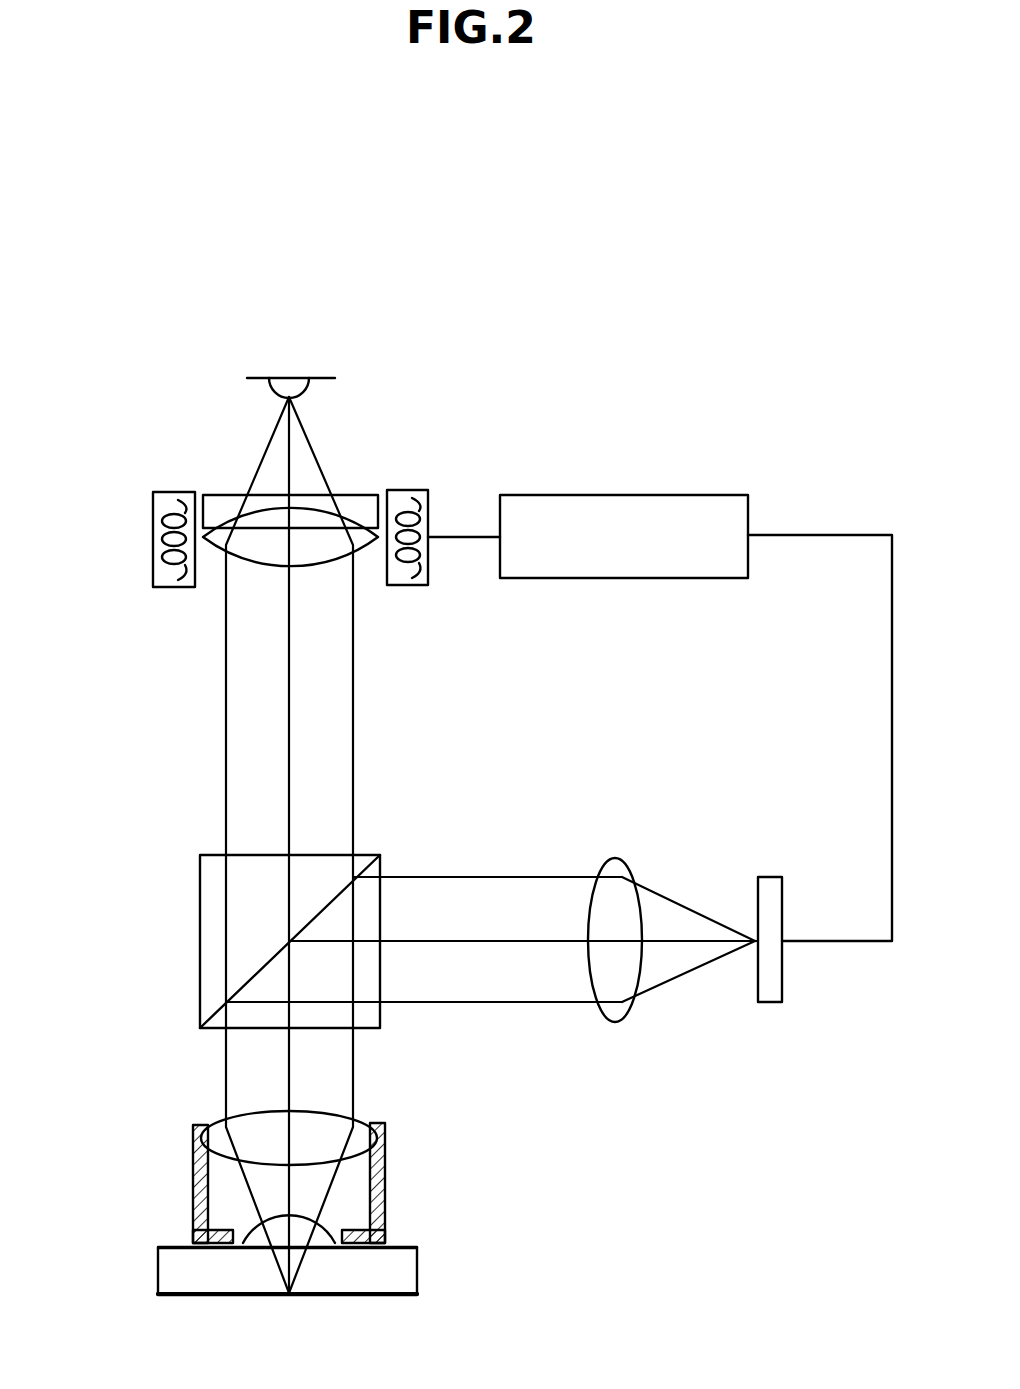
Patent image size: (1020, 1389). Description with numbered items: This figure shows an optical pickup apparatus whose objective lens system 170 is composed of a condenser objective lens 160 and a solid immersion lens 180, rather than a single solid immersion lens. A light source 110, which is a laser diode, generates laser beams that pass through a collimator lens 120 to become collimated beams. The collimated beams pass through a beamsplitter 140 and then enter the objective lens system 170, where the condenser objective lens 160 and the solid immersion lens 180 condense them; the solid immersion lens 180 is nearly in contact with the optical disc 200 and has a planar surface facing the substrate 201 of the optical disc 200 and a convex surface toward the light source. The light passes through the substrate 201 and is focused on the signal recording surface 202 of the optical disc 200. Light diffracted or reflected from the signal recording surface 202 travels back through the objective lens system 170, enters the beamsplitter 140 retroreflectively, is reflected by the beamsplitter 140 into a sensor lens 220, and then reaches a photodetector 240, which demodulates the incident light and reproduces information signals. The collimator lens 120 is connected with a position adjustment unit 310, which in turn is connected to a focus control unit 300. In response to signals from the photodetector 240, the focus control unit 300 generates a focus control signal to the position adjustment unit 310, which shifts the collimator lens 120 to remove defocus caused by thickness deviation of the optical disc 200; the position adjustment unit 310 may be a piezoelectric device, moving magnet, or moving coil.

The light source 110 is at (296, 378).
The collimator lens 120 is at (330, 560).
The position adjustment unit 310 is at (408, 490).
The focus control unit 300 is at (558, 495).
The beamsplitter 140 is at (370, 855).
The sensor lens 220 is at (630, 862).
The photodetector 240 is at (770, 877).
The condenser objective lens 160 is at (387, 1125).
The objective lens system 170 is at (186, 1177).
The solid immersion lens 180 is at (348, 1236).
The optical disc 200 is at (420, 1272).
The substrate 201 is at (158, 1275).
The signal recording surface 202 is at (158, 1295).